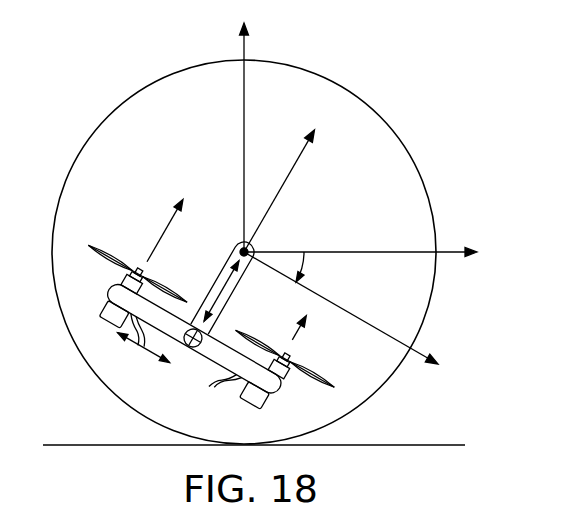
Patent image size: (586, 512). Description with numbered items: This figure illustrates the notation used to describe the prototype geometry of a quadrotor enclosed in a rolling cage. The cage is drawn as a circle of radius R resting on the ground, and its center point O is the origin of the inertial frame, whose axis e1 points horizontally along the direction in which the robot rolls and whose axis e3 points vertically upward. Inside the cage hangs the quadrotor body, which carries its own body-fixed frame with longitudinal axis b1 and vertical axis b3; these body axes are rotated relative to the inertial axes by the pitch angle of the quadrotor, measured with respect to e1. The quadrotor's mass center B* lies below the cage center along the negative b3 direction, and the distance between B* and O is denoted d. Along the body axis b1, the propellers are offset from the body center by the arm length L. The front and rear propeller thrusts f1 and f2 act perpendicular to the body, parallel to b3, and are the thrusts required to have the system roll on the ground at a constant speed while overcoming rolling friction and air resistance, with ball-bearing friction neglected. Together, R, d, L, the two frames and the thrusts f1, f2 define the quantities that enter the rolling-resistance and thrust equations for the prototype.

The radius of the cage R is at (220, 252).
The vertical inertial axis e3 is at (219, 26).
The horizontal inertial axis e1 is at (495, 248).
The vertical body axis b3 is at (331, 113).
The longitudinal body axis b1 is at (459, 376).
The distance between B* and O d is at (217, 291).
The propeller arm length L is at (144, 354).
The front propeller thrust f1 is at (162, 221).
The rear propeller thrust f2 is at (311, 336).